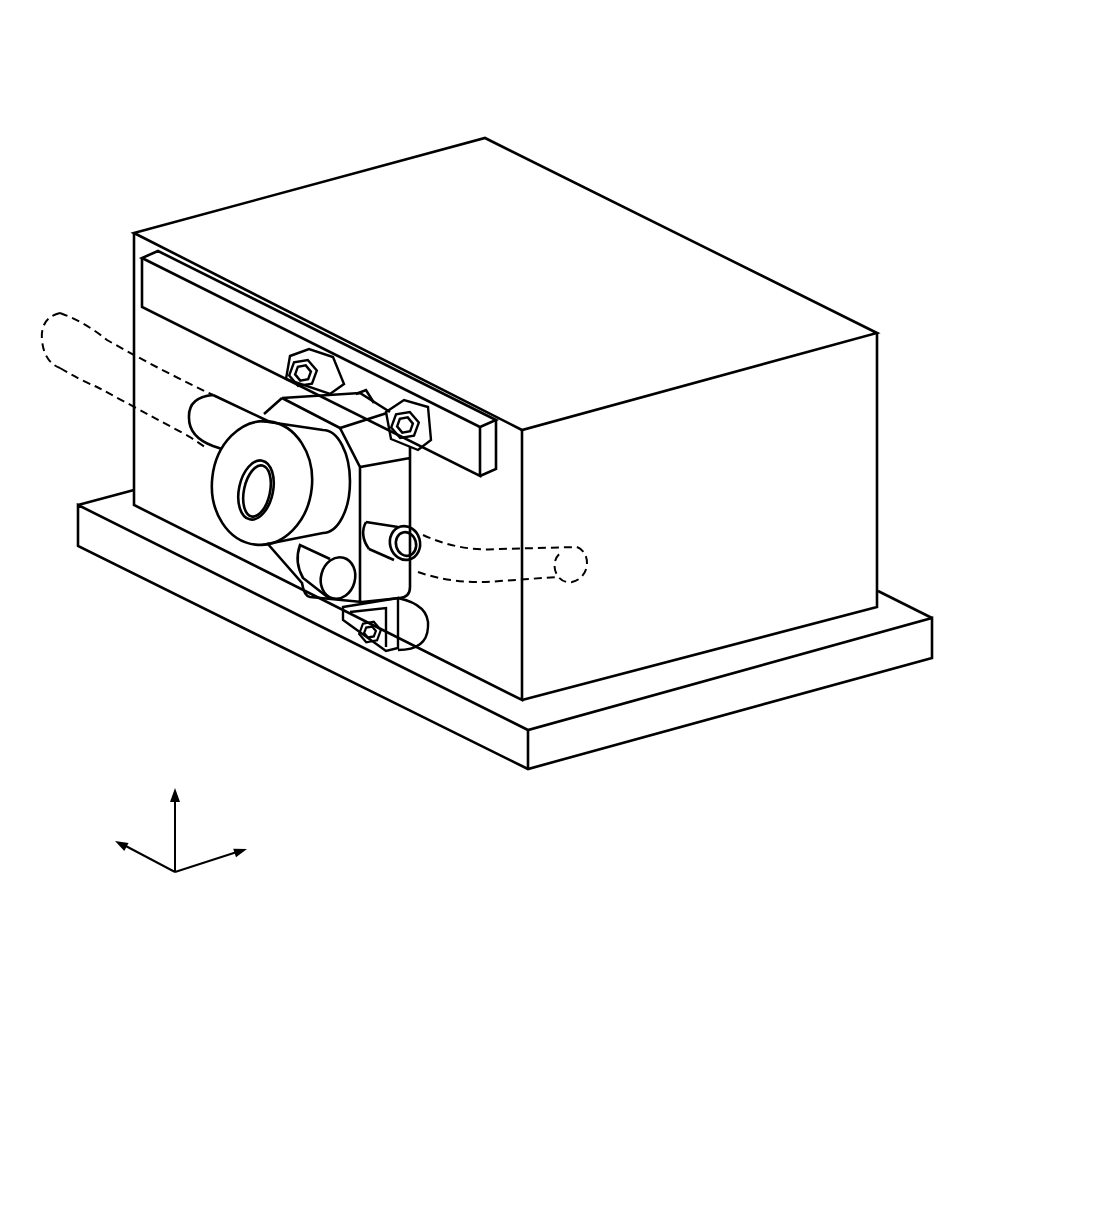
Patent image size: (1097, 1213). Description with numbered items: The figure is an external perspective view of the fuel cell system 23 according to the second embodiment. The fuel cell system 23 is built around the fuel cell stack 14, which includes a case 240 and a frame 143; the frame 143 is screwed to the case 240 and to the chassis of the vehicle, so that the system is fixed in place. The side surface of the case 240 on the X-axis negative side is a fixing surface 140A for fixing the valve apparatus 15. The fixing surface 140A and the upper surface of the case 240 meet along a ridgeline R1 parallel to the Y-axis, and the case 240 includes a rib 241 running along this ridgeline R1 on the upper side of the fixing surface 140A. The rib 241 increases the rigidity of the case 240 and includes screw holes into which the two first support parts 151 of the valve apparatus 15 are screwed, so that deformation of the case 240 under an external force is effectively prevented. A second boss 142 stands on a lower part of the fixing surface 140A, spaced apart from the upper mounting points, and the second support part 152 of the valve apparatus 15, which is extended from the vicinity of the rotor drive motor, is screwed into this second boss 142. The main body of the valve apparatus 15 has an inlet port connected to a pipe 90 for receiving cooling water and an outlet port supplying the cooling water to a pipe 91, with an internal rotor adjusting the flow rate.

The fuel cell system 23 is at (246, 90).
The fuel cell stack 14 is at (915, 203).
The case 240 is at (790, 288).
The frame 143 is at (903, 608).
The rib 241 is at (385, 378).
The ridgeline R1 is at (203, 270).
The fixing surface 140A is at (493, 648).
The valve apparatus 15 is at (227, 465).
The first support parts 151 is at (293, 362).
The second support part 152 is at (320, 607).
The second boss 142 is at (415, 636).
The pipe 90 is at (107, 330).
The pipe 91 is at (540, 582).